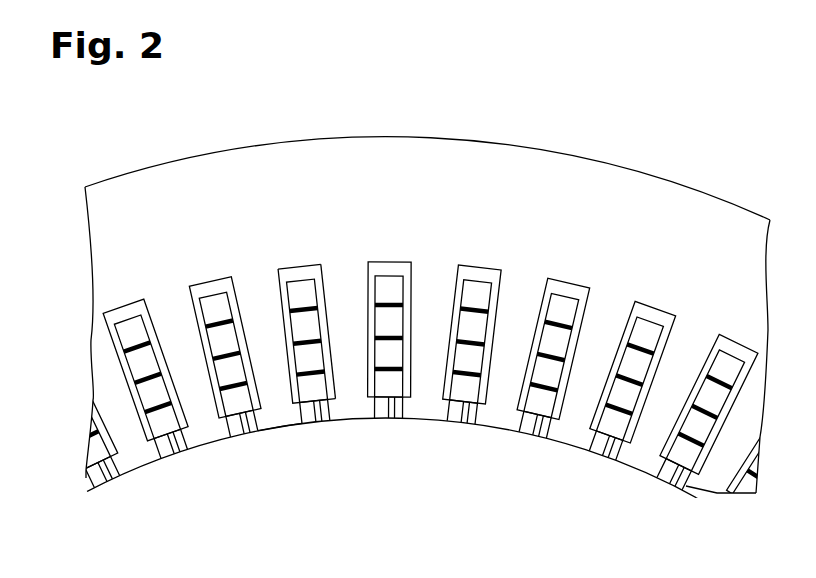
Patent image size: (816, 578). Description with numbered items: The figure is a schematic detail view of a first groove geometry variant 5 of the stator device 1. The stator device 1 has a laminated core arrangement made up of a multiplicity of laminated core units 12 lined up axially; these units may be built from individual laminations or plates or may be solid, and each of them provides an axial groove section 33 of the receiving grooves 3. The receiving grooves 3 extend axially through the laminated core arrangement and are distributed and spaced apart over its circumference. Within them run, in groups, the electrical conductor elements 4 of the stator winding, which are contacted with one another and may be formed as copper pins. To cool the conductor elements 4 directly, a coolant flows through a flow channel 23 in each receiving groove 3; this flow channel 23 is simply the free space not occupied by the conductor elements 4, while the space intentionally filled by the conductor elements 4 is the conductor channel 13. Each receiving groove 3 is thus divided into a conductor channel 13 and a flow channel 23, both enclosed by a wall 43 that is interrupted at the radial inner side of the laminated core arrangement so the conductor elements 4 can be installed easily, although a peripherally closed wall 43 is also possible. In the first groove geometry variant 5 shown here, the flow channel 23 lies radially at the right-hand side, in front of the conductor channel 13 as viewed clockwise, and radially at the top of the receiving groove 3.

The stator device 1 is at (598, 127).
The laminated core unit 12 is at (458, 165).
The receiving groove 3 is at (270, 266).
The conductor element 4 is at (213, 305).
The first groove geometry variant 5 is at (278, 230).
The conductor channel 13 is at (297, 270).
The flow channel 23 is at (313, 267).
The axial groove section 33 is at (328, 430).
The wall 43 is at (330, 325).